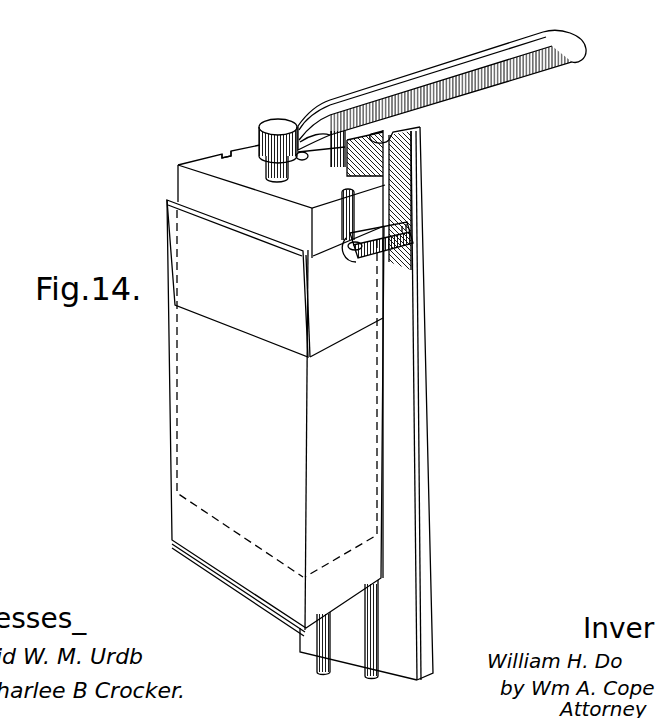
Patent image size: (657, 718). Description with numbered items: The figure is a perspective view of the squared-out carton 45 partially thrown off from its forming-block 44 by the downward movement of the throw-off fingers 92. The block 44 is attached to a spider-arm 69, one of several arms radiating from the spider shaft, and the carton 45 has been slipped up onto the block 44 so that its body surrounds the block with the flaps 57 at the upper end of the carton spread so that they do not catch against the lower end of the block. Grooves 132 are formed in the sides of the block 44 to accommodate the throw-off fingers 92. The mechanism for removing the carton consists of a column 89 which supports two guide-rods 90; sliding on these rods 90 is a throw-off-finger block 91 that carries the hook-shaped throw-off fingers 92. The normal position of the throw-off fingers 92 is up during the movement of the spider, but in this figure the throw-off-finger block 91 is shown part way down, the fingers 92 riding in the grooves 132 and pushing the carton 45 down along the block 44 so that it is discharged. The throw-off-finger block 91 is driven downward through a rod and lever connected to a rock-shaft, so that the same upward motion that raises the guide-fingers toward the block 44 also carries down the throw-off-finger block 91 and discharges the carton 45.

The block 44 is at (198, 178).
The carton 45 is at (275, 418).
The flaps 57 is at (275, 278).
The spider-arm 69 is at (520, 66).
The column 89 is at (406, 483).
The guide-rods 90 is at (309, 134).
The throw-off-finger block 91 is at (398, 258).
The throw-off fingers 92 is at (346, 250).
The grooves 132 is at (226, 155).